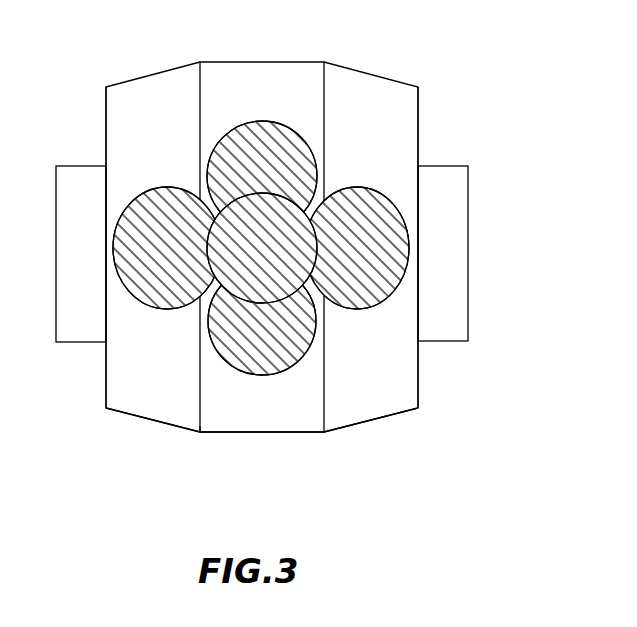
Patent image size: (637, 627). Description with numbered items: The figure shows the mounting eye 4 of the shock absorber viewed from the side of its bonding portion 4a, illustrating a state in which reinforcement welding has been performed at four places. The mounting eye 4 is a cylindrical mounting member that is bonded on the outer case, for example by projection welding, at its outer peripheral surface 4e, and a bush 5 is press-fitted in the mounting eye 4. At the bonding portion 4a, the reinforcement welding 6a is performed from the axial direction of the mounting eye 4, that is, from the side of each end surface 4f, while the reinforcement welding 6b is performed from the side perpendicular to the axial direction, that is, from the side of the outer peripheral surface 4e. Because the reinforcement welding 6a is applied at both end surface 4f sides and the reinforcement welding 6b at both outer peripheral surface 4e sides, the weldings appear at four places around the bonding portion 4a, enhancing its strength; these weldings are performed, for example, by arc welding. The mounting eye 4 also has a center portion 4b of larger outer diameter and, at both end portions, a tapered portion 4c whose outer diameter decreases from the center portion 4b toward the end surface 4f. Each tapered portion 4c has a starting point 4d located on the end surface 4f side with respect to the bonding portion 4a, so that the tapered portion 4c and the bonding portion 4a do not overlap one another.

The mounting eye 4 is at (420, 391).
The bonding portion 4a is at (304, 212).
The center portion 4b is at (300, 435).
The tapered portion 4c is at (140, 420).
The starting point 4d is at (199, 107).
The outer peripheral surface 4e is at (215, 432).
The end surface 4f is at (104, 398).
The bush 5 is at (468, 213).
The reinforcement welding 6a is at (150, 192).
The reinforcement welding 6b is at (258, 120).